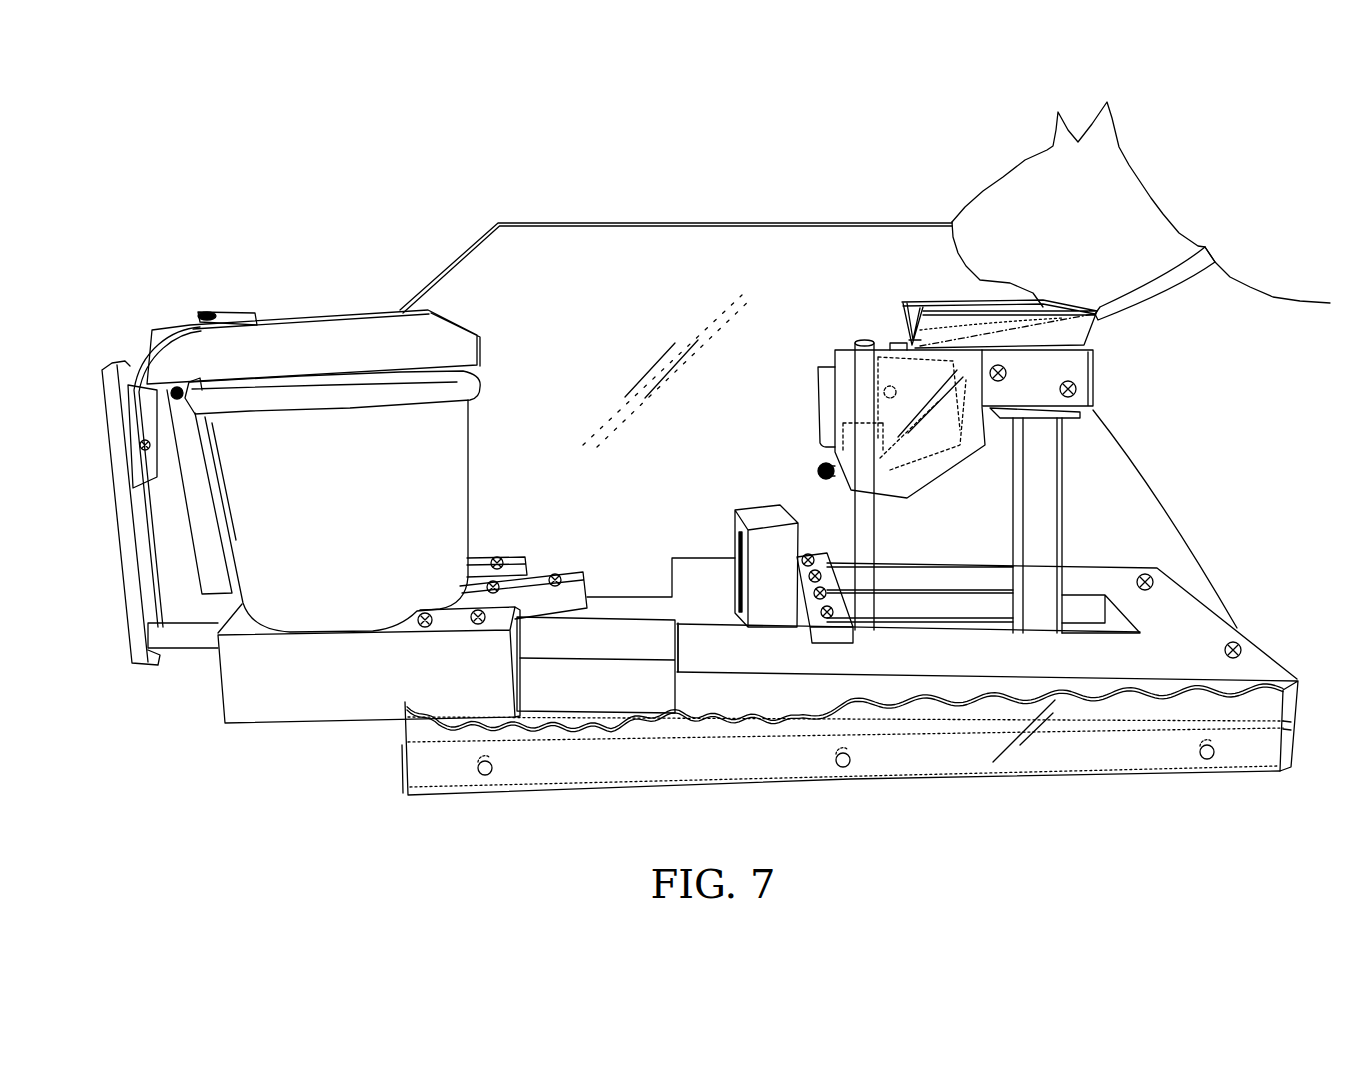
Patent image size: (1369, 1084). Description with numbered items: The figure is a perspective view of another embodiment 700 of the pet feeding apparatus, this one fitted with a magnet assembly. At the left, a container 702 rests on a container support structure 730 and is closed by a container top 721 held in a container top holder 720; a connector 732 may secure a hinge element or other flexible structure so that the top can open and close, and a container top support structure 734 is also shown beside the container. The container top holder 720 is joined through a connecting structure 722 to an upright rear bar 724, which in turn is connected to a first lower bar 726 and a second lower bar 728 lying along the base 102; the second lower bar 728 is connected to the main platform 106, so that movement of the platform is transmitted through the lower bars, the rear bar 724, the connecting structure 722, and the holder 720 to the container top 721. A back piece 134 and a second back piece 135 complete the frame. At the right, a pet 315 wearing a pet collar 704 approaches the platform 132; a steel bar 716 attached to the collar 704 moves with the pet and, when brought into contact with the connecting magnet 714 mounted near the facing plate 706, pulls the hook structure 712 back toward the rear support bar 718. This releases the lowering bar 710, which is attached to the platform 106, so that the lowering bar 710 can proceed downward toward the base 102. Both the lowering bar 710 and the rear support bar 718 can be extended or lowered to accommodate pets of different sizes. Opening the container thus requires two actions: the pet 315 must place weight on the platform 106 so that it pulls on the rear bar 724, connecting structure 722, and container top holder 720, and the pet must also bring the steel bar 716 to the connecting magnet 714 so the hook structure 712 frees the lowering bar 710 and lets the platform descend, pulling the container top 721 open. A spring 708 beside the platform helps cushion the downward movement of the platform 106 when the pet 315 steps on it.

The embodiment 700 is at (445, 120).
The back piece 134 is at (893, 222).
The pet 315 is at (1127, 190).
The pet collar 704 is at (1133, 316).
The steel bar 716 is at (967, 320).
The platform 132 is at (905, 305).
The connecting magnet 714 is at (905, 328).
The facing plate 706 is at (845, 360).
The lowering bar 710 is at (832, 448).
The hook structure 712 is at (910, 453).
The spring 708 is at (735, 550).
The rear support bar 718 is at (1043, 598).
The base 102 is at (1285, 752).
The main platform 106 is at (778, 688).
The second back piece 135 is at (560, 763).
The second lower bar 728 is at (585, 658).
The container support structure 730 is at (310, 700).
The first lower bar 726 is at (192, 640).
The container top support structure 734 is at (212, 557).
The rear bar 724 is at (130, 613).
The connecting structure 722 is at (155, 337).
The connector 732 is at (177, 390).
The container top holder 720 is at (345, 352).
The container top 721 is at (453, 383).
The container 702 is at (447, 488).